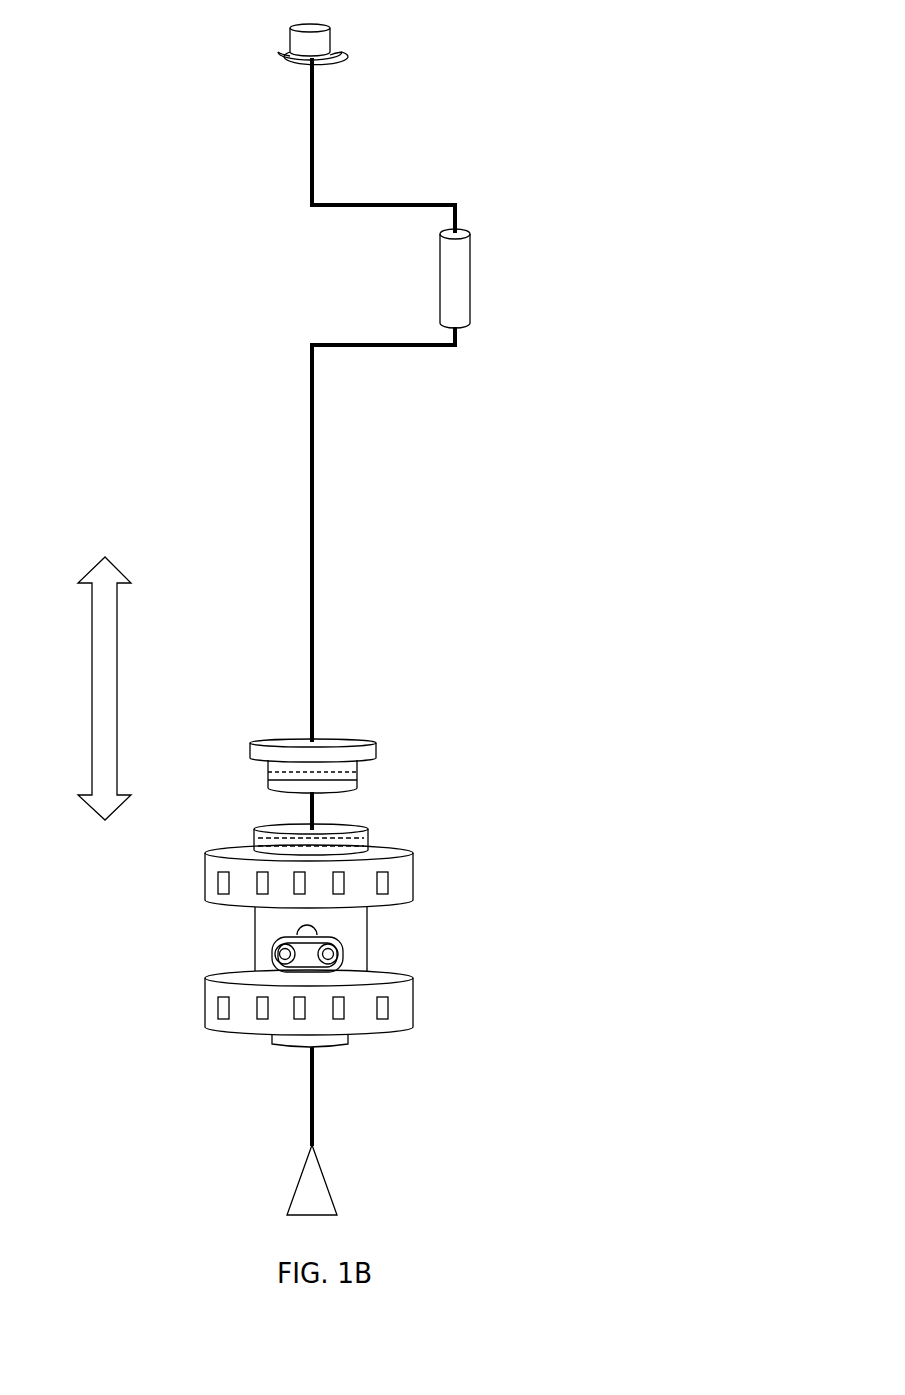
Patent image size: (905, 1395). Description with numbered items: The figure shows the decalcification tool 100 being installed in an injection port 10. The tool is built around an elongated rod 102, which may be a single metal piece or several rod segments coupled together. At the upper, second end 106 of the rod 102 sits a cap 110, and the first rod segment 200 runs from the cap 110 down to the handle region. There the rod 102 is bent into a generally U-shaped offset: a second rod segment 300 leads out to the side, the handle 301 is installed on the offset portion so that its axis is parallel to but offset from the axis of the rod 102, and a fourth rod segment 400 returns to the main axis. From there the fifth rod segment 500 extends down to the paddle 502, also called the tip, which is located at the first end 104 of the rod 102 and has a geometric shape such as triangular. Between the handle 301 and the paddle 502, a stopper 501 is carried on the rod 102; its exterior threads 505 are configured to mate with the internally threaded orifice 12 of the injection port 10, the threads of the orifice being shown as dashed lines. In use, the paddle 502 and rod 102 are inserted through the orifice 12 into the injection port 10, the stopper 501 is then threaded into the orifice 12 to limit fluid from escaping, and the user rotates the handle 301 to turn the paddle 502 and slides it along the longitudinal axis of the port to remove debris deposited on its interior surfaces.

The decalcification tool 100 is at (148, 108).
The cap 110 is at (373, 27).
The first rod segment 200 is at (330, 125).
The second end 106 is at (270, 123).
The second rod segment 300 is at (468, 217).
The handle 301 is at (438, 278).
The fourth rod segment 400 is at (360, 352).
The elongated rod 102 is at (285, 403).
The fifth rod segment 500 is at (303, 518).
The stopper 501 is at (383, 772).
The threads 505 is at (267, 773).
The orifice 12 is at (345, 827).
The injection port 10 is at (447, 863).
The first end 104 is at (248, 1153).
The paddle 502 is at (322, 1168).